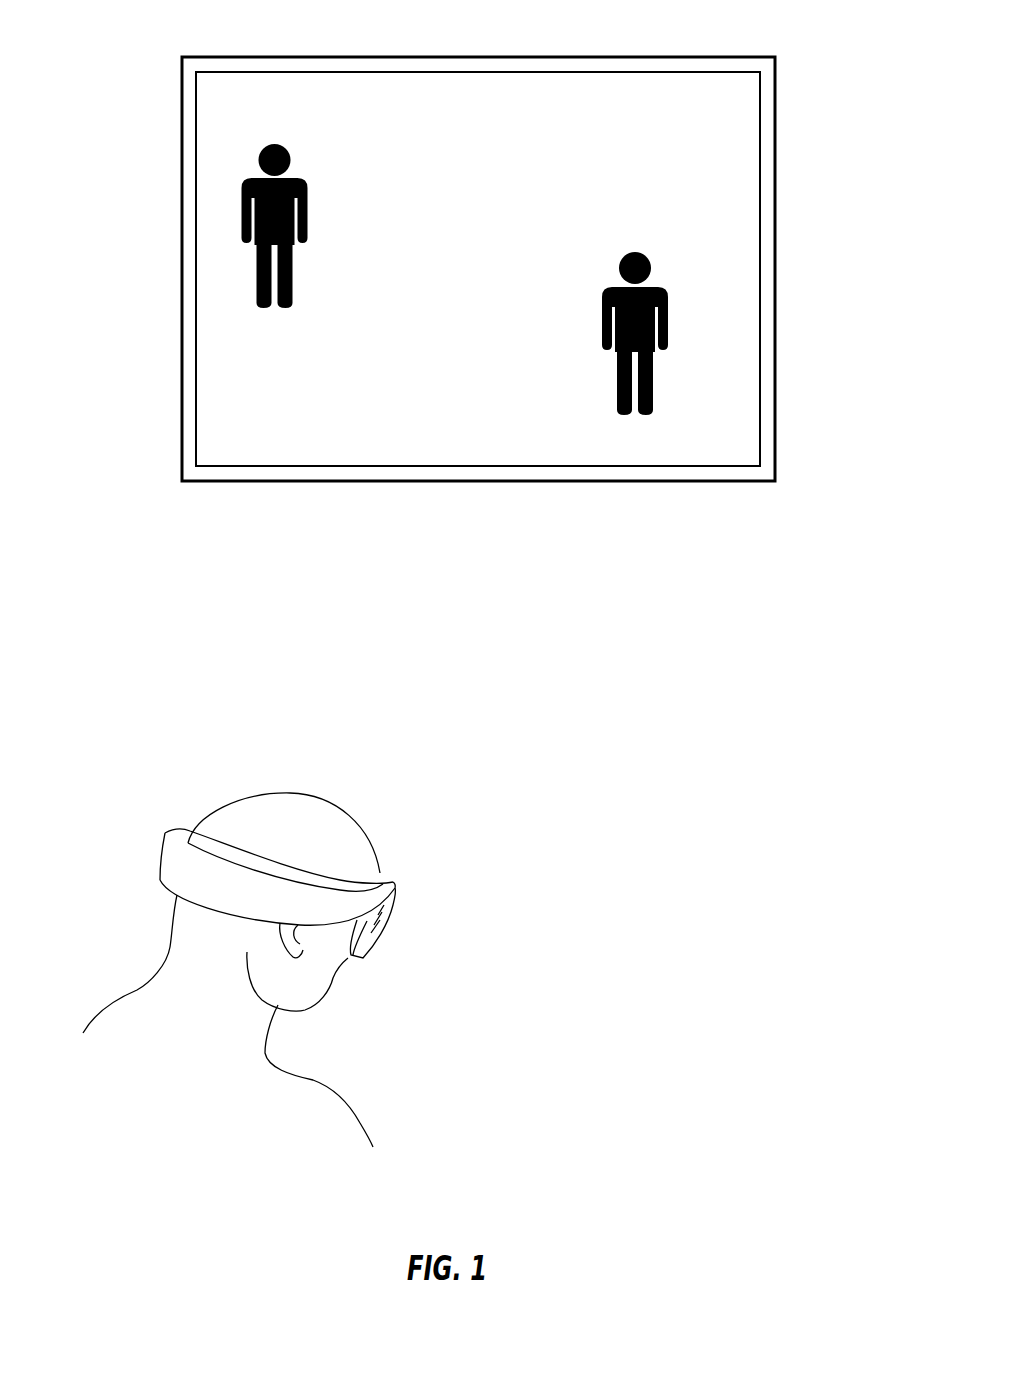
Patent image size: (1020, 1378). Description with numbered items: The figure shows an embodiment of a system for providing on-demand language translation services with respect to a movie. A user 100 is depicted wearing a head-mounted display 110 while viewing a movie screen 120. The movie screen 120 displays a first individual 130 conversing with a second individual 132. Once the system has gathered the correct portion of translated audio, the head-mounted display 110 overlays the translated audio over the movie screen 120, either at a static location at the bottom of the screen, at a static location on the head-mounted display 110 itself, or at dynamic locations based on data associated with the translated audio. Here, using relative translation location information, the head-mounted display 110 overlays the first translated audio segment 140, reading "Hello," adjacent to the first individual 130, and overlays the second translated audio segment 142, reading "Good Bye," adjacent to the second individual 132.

The user 100 is at (334, 1062).
The head-mounted display 110 is at (421, 861).
The movie screen 120 is at (168, 372).
The first individual 130 is at (246, 143).
The second individual 132 is at (666, 331).
The first translated audio segment 140 is at (359, 122).
The second translated audio segment 142 is at (547, 228).